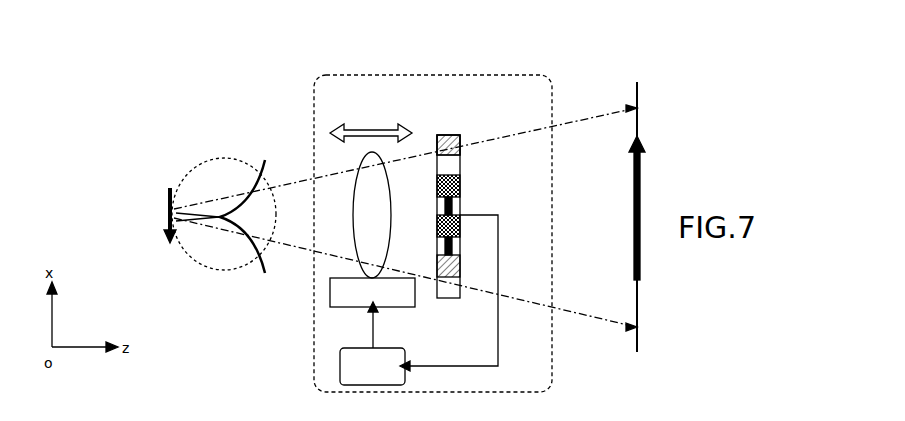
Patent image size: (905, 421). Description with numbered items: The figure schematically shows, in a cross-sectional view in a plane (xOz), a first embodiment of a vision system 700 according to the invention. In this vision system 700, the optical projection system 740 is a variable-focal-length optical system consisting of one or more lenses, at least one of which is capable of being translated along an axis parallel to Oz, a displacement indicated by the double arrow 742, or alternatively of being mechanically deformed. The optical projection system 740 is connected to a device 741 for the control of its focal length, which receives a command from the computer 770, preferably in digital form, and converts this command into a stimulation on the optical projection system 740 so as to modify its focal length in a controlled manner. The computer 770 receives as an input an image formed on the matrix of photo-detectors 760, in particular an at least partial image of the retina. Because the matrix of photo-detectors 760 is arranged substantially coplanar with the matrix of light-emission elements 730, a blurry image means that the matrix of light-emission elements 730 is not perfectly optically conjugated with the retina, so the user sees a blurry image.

The vision system 700 is at (130, 130).
The optical projection system 740 is at (362, 186).
The device for the control of focal length 741 is at (330, 290).
The movement direction of lens 742 is at (367, 130).
The matrix of light-emission elements 730 is at (436, 158).
The matrix of photo-detectors 760 is at (448, 134).
The computer 770 is at (352, 366).